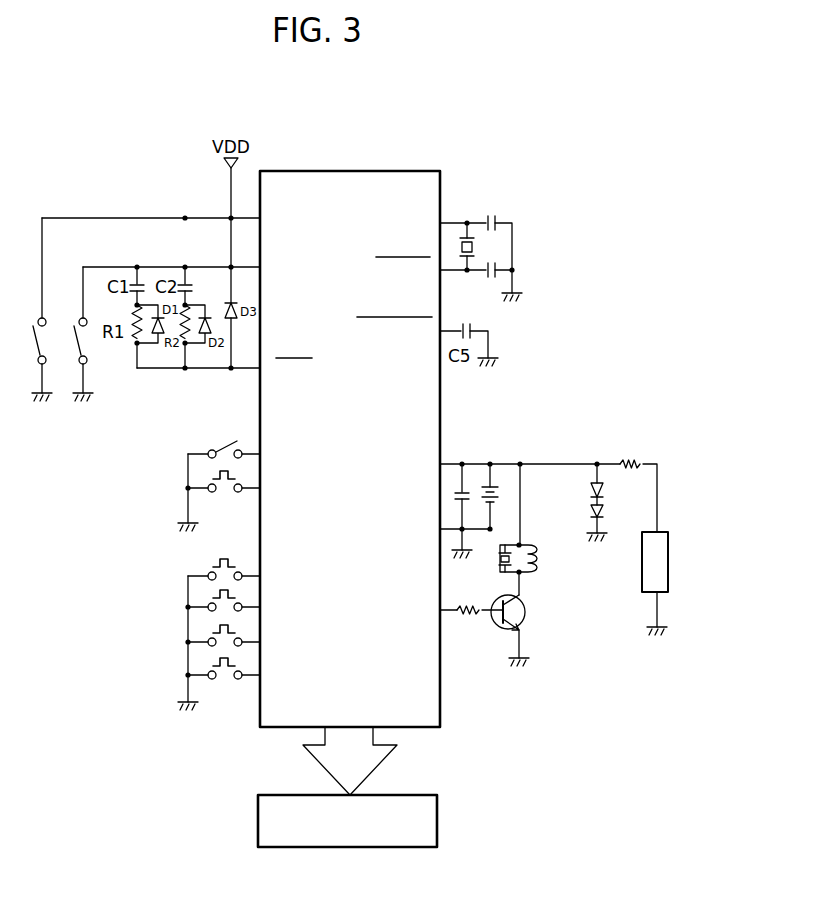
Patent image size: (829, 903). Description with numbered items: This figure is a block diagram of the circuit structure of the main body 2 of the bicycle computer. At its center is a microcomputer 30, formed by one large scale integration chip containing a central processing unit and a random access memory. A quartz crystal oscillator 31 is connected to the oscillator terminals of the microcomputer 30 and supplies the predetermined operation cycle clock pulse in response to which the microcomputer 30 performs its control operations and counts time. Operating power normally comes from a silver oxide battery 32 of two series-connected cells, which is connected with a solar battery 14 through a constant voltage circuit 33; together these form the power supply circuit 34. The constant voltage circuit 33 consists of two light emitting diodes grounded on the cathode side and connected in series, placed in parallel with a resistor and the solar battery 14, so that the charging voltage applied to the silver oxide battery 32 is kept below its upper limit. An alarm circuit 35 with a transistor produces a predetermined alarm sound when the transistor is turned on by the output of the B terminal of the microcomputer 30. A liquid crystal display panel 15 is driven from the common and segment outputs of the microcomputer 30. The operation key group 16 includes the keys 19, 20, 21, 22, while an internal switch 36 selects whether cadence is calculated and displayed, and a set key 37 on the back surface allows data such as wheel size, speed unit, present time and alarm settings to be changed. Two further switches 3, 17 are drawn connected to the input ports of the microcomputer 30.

The main body 2 is at (387, 424).
The switch 3 is at (36, 349).
The solar battery 14 is at (668, 565).
The liquid crystal display panel 15 is at (272, 833).
The operation key group 16 is at (170, 642).
The switch 17 is at (78, 349).
The key 19 is at (225, 492).
The key 20 is at (210, 568).
The key 21 is at (210, 632).
The key 22 is at (210, 598).
The microcomputer 30 is at (400, 187).
The quartz crystal oscillator 31 is at (530, 215).
The silver oxide battery 32 is at (502, 495).
The constant voltage circuit 33 is at (613, 458).
The power supply circuit 34 is at (659, 517).
The alarm circuit 35 is at (533, 598).
The internal switch 36 is at (212, 446).
The set key 37 is at (210, 665).